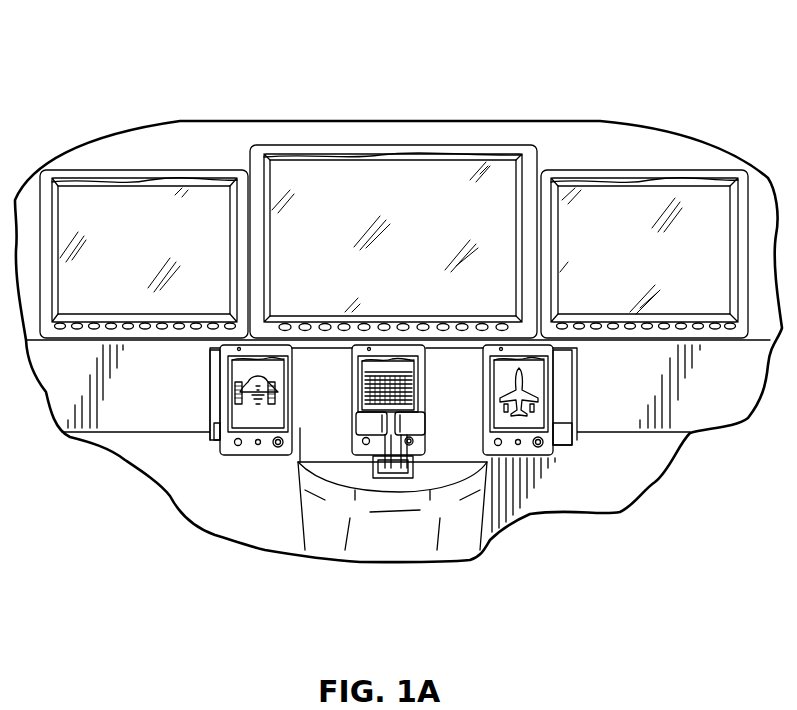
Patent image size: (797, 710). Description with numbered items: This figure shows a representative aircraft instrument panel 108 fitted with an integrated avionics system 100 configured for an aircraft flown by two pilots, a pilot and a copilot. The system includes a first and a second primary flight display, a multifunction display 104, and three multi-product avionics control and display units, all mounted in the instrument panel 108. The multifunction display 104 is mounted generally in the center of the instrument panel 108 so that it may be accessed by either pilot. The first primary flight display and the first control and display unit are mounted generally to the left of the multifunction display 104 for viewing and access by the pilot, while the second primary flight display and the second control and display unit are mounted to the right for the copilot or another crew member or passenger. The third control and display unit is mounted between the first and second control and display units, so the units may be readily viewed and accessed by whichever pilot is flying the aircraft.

The integrated avionics system 100 is at (650, 60).
The multifunction display 104 is at (407, 197).
The instrument panel 108 is at (703, 392).